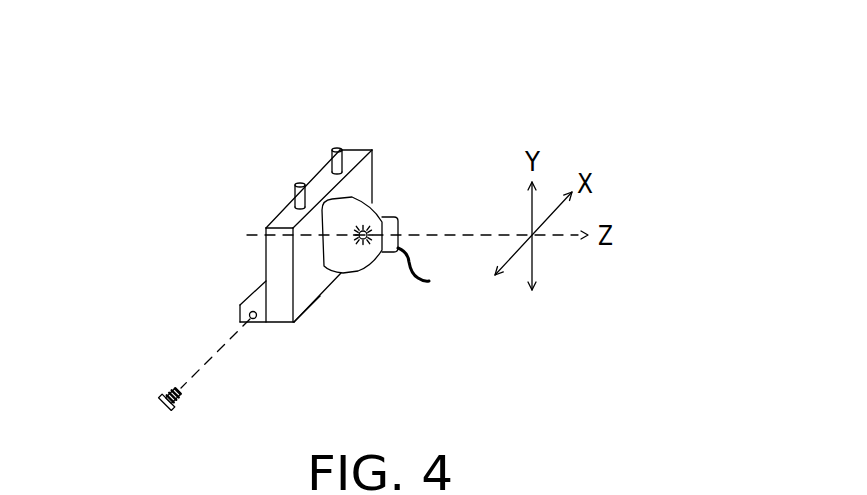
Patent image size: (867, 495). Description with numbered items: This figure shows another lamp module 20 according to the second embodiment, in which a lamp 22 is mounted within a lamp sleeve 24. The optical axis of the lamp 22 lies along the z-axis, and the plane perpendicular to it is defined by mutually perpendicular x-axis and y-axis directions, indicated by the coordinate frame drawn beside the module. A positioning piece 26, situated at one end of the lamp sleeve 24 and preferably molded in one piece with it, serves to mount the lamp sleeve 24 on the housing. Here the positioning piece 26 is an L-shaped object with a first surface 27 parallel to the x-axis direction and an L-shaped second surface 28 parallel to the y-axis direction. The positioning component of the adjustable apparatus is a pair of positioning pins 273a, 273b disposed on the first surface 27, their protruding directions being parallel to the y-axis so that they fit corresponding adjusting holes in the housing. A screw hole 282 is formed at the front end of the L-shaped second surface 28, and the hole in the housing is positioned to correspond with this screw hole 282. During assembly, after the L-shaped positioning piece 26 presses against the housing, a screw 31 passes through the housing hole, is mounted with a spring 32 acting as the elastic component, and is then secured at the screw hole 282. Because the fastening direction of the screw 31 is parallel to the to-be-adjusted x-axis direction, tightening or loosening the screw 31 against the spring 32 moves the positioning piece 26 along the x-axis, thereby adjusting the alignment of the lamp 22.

The lamp module 20 is at (398, 167).
The lamp 22 is at (370, 222).
The lamp sleeve 24 is at (362, 273).
The positioning piece 26 is at (318, 298).
The first surface 27 is at (353, 153).
The positioning pin 273a is at (337, 147).
The positioning pin 273b is at (300, 182).
The second surface 28 is at (281, 316).
The screw hole 282 is at (252, 321).
The screw 31 is at (166, 404).
The spring 32 is at (168, 390).